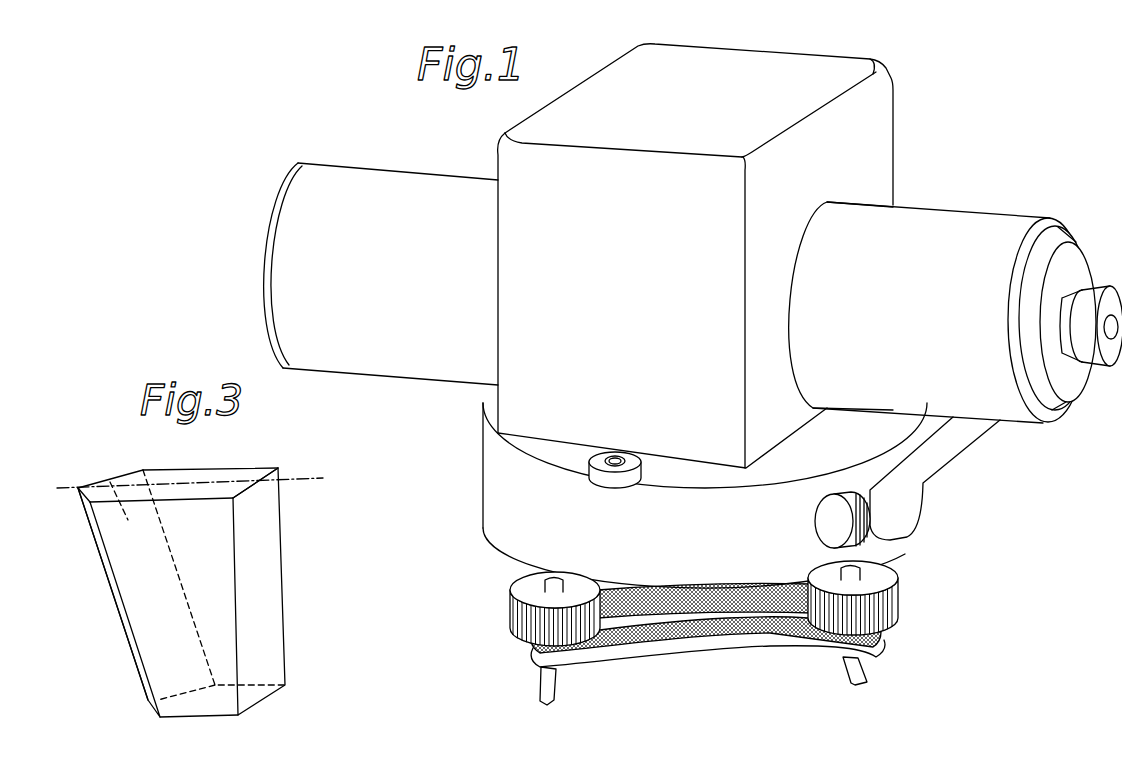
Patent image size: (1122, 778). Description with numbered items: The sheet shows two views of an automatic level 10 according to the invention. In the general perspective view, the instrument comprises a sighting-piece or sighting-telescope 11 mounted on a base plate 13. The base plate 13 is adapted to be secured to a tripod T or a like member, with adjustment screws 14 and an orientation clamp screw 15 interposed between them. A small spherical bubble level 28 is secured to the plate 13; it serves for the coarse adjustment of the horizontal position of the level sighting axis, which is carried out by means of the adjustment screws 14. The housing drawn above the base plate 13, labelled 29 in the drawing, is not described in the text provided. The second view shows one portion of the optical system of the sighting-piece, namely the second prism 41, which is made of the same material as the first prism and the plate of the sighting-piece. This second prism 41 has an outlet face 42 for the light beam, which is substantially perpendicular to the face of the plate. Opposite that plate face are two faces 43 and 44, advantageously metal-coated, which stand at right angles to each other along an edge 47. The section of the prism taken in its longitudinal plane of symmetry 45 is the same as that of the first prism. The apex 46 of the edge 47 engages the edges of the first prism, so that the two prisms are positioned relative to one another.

In FIG. 1, the automatic level 10 is at (899, 190).
In FIG. 1, the sighting-telescope 11 is at (933, 227).
In FIG. 1, the base plate 13 is at (498, 503).
In FIG. 1, the adjustment screws 14 is at (898, 602).
In FIG. 1, the orientation clamp screw 15 is at (870, 531).
In FIG. 1, the spherical bubble level 28 is at (594, 458).
In FIG. 1, the housing cover 29 is at (824, 48).
In FIG. 1, the tripod T is at (858, 670).
In FIG. 3, the second prism 41 is at (290, 590).
In FIG. 3, the outlet face 42 is at (260, 650).
In FIG. 3, the face 43 is at (132, 637).
In FIG. 3, the face 44 is at (112, 480).
In FIG. 3, the longitudinal plane of symmetry 45 is at (208, 487).
In FIG. 3, the apex 46 is at (78, 488).
In FIG. 3, the edge 47 is at (102, 573).